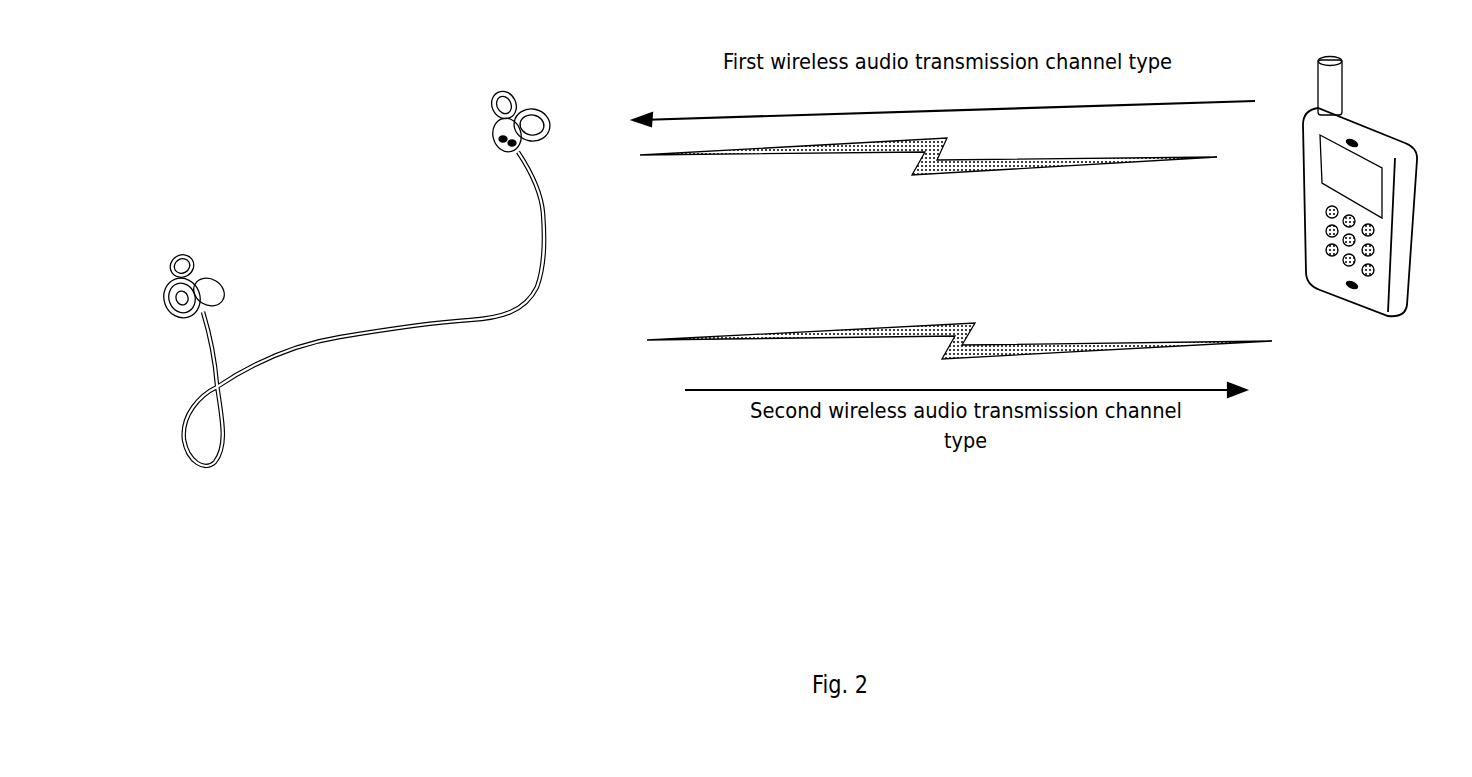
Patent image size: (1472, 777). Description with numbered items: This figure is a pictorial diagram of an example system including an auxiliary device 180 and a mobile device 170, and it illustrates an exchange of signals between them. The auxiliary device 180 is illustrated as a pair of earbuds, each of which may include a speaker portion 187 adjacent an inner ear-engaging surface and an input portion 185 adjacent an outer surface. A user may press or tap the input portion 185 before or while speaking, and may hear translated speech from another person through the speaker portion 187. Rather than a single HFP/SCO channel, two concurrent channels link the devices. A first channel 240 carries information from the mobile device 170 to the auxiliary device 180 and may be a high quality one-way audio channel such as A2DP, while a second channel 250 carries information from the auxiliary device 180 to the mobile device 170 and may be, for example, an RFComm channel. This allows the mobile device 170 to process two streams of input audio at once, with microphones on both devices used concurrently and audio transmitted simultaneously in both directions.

The mobile device 170 is at (1385, 130).
The auxiliary device 180 is at (326, 276).
The input portion 185 is at (168, 310).
The speaker portion 187 is at (223, 302).
The first channel 240 is at (1035, 168).
The second channel 250 is at (823, 331).